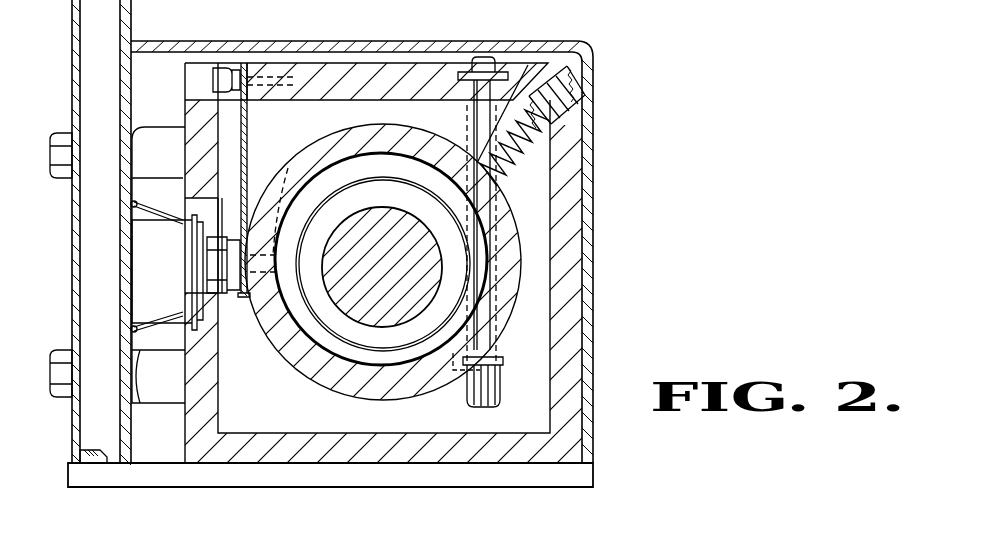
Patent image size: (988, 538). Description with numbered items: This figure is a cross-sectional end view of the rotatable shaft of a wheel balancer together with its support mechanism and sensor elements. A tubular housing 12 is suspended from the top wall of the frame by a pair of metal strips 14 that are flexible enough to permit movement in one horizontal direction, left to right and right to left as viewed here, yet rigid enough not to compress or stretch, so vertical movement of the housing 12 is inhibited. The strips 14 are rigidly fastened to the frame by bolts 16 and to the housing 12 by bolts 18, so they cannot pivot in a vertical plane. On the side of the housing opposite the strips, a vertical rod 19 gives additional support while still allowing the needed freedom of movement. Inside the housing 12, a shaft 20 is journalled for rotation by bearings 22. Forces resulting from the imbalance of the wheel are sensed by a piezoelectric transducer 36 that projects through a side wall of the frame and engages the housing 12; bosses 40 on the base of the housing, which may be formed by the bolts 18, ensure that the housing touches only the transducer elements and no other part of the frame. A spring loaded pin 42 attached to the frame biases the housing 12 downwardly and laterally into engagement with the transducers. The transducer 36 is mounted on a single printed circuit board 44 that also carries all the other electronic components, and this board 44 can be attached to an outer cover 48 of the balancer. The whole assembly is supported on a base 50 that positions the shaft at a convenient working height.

The tubular housing 12 is at (303, 380).
The metal strips 14 is at (242, 115).
The bolts 16 is at (226, 68).
The bolts 18 is at (287, 170).
The vertical rod 19 is at (488, 258).
The shaft 20 is at (397, 328).
The bearings 22 is at (345, 182).
The piezoelectric transducer 36 is at (207, 265).
The bosses 40 is at (232, 297).
The spring loaded pins 42 is at (550, 154).
The printed circuit board 44 is at (131, 22).
The outer cover 48 is at (72, 18).
The base 50 is at (593, 478).